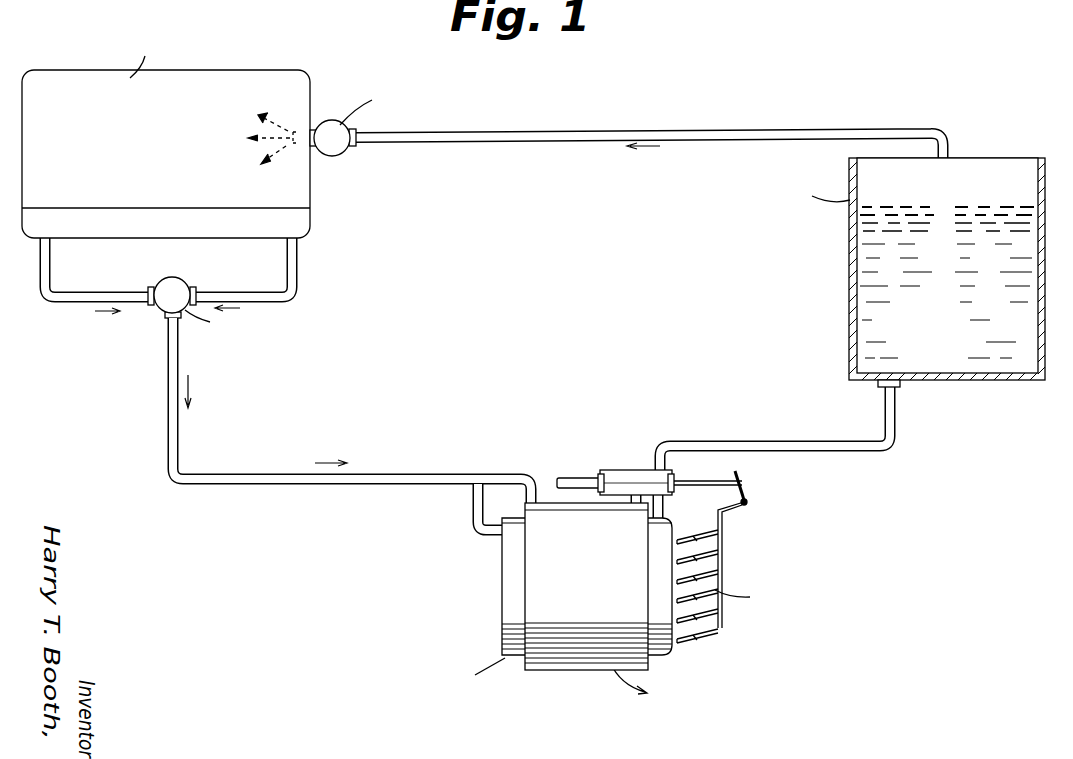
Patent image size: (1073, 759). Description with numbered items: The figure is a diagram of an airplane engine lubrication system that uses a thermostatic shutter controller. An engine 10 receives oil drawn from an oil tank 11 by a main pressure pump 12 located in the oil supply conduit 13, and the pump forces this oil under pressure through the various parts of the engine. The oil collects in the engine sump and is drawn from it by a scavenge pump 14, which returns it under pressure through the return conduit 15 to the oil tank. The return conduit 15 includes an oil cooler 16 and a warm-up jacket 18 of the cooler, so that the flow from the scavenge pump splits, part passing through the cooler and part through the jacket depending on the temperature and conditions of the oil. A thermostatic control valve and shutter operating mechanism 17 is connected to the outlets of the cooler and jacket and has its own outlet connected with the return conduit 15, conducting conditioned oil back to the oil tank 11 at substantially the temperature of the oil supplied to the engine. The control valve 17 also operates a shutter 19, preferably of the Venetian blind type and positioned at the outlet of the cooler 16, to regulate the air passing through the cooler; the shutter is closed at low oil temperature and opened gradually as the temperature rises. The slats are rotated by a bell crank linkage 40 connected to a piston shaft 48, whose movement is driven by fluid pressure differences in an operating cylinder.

The engine 10 is at (262, 78).
The oil tank 11 is at (848, 293).
The main pressure pump 12 is at (342, 152).
The oil supply conduit 13 is at (578, 138).
The scavenge pump 14 is at (185, 290).
The return conduit 15 is at (180, 440).
The oil cooler 16 is at (505, 608).
The thermostatic control valve and shutter operating mechanism 17 is at (600, 475).
The warm-up jacket 18 is at (555, 668).
The shutter 19 is at (722, 556).
The bell crank linkage 40 is at (748, 495).
The piston shaft 48 is at (705, 488).